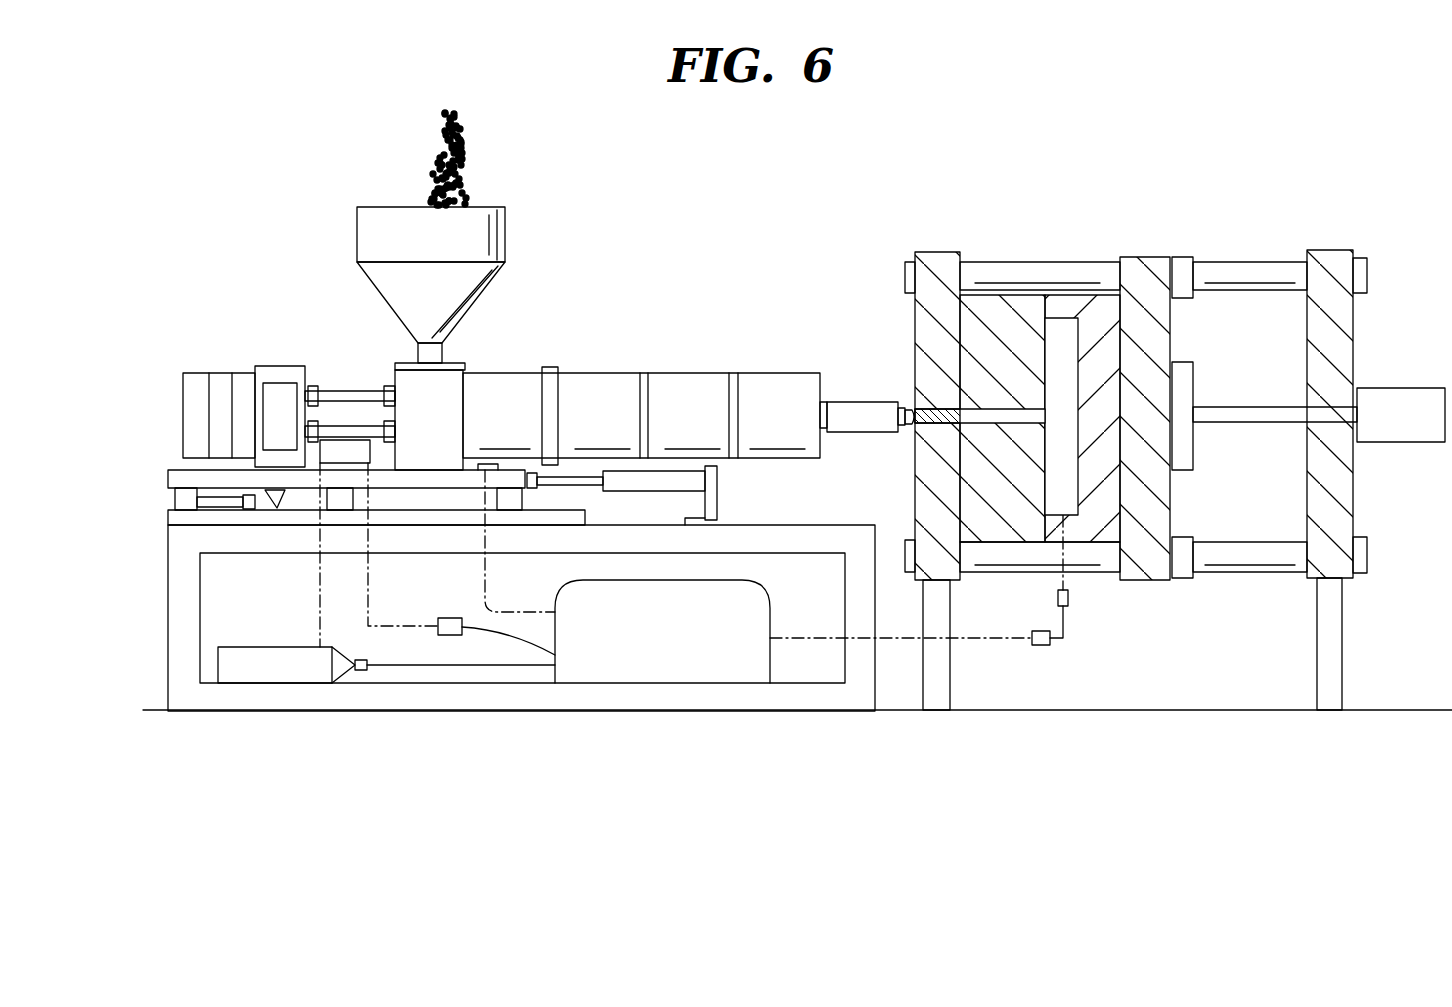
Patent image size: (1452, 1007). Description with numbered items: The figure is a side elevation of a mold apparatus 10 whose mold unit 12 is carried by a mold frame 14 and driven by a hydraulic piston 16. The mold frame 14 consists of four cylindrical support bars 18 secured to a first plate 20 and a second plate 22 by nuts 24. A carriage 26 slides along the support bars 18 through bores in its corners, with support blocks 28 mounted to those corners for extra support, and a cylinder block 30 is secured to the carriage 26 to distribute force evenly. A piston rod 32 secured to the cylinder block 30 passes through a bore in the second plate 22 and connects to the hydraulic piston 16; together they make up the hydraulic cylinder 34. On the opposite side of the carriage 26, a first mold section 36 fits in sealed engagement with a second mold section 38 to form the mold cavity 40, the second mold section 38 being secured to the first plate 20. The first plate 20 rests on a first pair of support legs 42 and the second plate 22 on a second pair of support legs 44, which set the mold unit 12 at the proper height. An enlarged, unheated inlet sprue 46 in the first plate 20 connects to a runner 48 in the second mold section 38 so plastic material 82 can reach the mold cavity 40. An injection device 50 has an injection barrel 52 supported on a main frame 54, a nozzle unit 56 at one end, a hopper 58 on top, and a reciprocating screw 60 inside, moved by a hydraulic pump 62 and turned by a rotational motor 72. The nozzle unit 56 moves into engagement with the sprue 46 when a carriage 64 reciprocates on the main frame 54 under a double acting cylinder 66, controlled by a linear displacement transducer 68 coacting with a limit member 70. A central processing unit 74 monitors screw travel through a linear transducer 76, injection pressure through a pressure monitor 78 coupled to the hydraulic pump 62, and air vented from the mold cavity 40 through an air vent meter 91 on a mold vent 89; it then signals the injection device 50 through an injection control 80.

The mold apparatus 10 is at (976, 176).
The mold unit 12 is at (1045, 260).
The mold frame 14 is at (1072, 578).
The hydraulic piston 16 is at (1377, 456).
The support bars 18 is at (1255, 262).
The first plate 20 is at (935, 250).
The second plate 22 is at (1333, 252).
The nuts 24 is at (905, 276).
The carriage 26 is at (1143, 258).
The support blocks 28 is at (1182, 258).
The cylinder block 30 is at (1196, 462).
The piston rod 32 is at (1245, 410).
The hydraulic cylinder 34 is at (1393, 392).
The first mold section 36 is at (1100, 302).
The second mold section 38 is at (1012, 312).
The mold cavity 40 is at (1060, 515).
The first pair of support legs 42 is at (950, 667).
The second pair of support legs 44 is at (1342, 656).
The inlet sprue 46 is at (926, 418).
The runner 48 is at (1020, 424).
The injection device 50 is at (752, 333).
The injection barrel 52 is at (683, 388).
The main frame 54 is at (640, 692).
The nozzle unit 56 is at (858, 403).
The hopper 58 is at (388, 233).
The reciprocating screw 60 is at (342, 387).
The hydraulic pump 62 is at (275, 680).
The carriage 64 is at (167, 470).
The double acting cylinder 66 is at (207, 512).
The linear displacement transducer 68 is at (720, 480).
The limit member 70 is at (540, 506).
The rotational motor 72 is at (219, 390).
The central processing unit 74 is at (770, 620).
The linear transducer 76 is at (453, 618).
The pressure monitor 78 is at (358, 673).
The injection control 80 is at (488, 462).
The plastic material 82 is at (466, 162).
The mold vent 89 is at (1068, 620).
The air vent meter 91 is at (1045, 648).